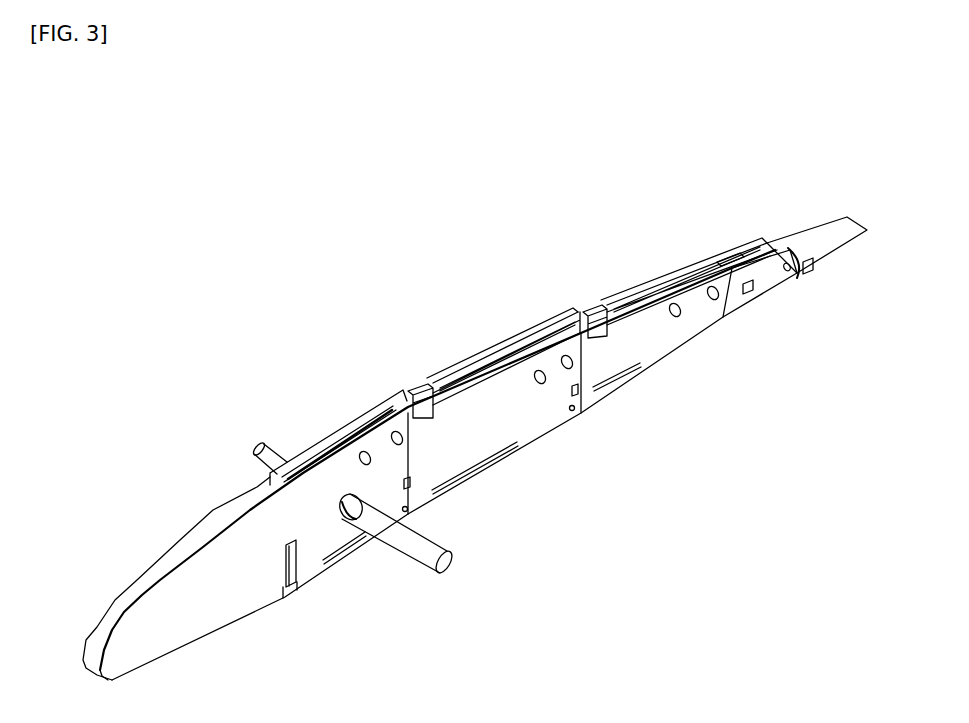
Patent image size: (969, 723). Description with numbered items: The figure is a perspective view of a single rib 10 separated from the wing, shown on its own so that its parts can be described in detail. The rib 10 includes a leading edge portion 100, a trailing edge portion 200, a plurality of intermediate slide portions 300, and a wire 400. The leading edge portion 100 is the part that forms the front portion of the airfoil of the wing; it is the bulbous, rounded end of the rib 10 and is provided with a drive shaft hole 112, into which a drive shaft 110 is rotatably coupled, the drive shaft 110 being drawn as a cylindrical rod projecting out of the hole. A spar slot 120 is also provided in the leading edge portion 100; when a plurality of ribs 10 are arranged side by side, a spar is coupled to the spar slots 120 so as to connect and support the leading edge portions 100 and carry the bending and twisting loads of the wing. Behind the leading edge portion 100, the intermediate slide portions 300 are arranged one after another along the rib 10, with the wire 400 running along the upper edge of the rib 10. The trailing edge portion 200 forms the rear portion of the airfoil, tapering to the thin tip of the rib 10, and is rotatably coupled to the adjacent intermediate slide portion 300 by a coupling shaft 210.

The rib 10 is at (166, 227).
The leading edge portion 100 is at (213, 507).
The drive shaft 110 is at (435, 550).
The drive shaft hole 112 is at (358, 525).
The spar slot 120 is at (286, 586).
The trailing edge portion 200 is at (833, 227).
The coupling shaft 210 is at (792, 255).
The intermediate slide portion 300 is at (484, 348).
The wire 400 is at (343, 437).